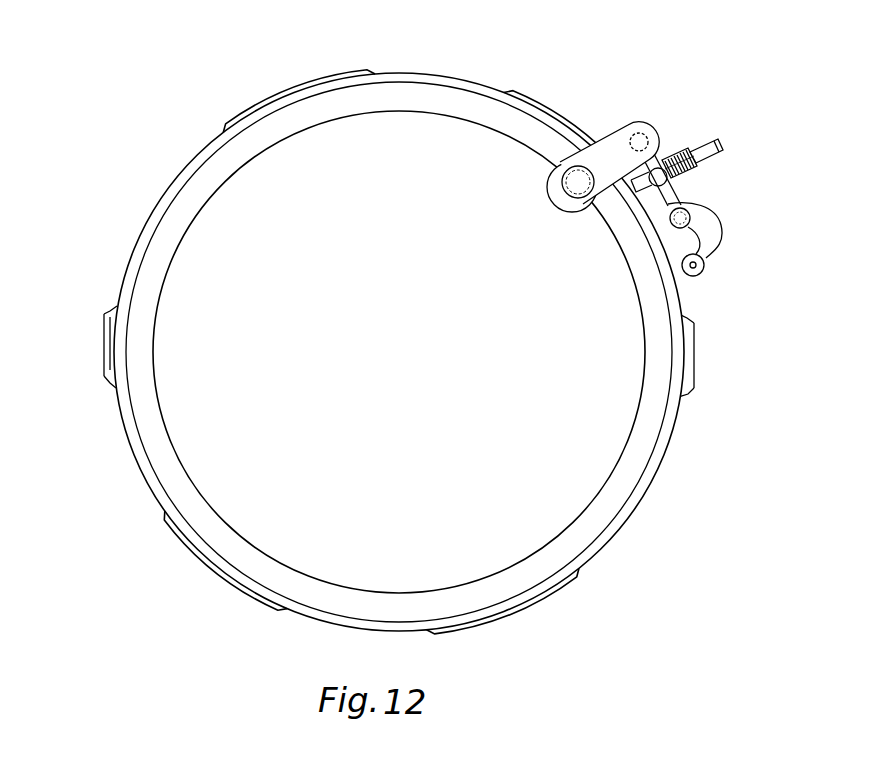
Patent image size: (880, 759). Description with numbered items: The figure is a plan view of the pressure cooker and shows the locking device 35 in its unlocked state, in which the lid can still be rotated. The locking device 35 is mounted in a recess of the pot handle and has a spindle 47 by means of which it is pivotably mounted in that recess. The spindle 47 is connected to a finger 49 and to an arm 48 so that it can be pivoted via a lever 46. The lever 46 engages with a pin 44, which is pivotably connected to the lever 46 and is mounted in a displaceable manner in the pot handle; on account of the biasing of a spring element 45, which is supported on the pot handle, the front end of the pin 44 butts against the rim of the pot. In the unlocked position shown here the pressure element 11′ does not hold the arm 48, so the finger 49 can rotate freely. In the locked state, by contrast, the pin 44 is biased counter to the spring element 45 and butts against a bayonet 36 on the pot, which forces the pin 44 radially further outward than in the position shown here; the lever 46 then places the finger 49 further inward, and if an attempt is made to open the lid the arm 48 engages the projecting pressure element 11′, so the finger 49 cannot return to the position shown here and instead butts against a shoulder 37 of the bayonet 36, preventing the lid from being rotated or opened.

The pressure element 11′ is at (554, 162).
The locking device 35 is at (654, 133).
The bayonet 36 is at (102, 349).
The shoulder 37 is at (115, 310).
The pin 44 is at (723, 151).
The spring element 45 is at (690, 170).
The lever 46 is at (690, 204).
The spindle 47 is at (720, 236).
The arm 48 is at (604, 160).
The finger 49 is at (706, 272).